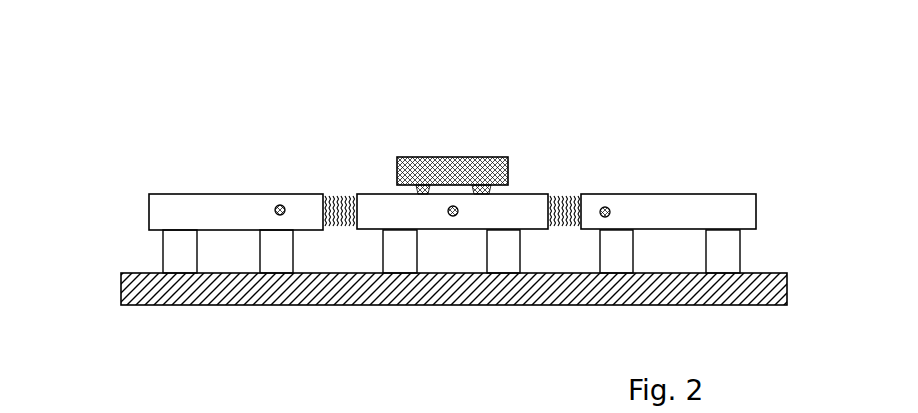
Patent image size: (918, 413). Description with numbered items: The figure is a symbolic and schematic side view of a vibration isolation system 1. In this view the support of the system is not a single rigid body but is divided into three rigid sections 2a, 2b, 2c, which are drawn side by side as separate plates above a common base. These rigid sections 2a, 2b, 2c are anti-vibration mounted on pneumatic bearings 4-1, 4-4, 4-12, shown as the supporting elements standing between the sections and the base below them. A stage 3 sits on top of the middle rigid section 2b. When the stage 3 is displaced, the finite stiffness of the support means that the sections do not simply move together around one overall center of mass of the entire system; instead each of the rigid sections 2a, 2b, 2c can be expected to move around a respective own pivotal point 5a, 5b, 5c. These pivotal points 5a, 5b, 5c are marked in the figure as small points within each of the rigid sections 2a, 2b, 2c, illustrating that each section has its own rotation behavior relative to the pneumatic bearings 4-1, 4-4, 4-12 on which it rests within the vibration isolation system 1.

The vibration isolation system 1 is at (226, 333).
The rigid section 2a is at (231, 210).
The rigid section 2b is at (403, 210).
The rigid section 2c is at (657, 205).
The stage 3 is at (442, 165).
The pneumatic bearing 4-1 is at (173, 250).
The pneumatic bearing 4-4 is at (273, 245).
The pneumatic bearing 4-12 is at (721, 255).
The pivotal point 5a is at (282, 204).
The pivotal point 5b is at (453, 217).
The pivotal point 5c is at (605, 205).